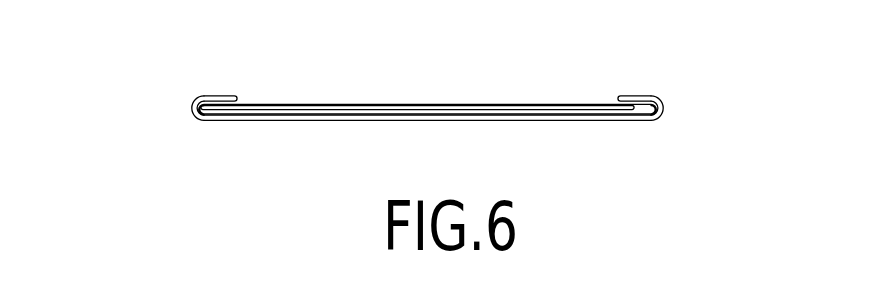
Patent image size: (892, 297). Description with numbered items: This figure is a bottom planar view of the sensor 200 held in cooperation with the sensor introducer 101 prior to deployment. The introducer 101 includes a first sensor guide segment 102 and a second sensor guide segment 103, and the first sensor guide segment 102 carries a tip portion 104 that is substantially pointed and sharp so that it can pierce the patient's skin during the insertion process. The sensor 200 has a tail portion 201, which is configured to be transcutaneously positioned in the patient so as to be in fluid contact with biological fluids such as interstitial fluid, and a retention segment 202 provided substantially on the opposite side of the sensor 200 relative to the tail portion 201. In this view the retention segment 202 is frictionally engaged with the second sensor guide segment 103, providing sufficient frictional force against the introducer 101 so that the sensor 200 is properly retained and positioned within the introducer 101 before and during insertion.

The sensor introducer 101 is at (617, 121).
The first sensor guide segment 102 is at (215, 95).
The second sensor guide segment 103 is at (665, 107).
The tip portion 104 is at (190, 105).
The sensor 200 is at (293, 104).
The tail portion 201 is at (211, 109).
The retention segment 202 is at (641, 96).